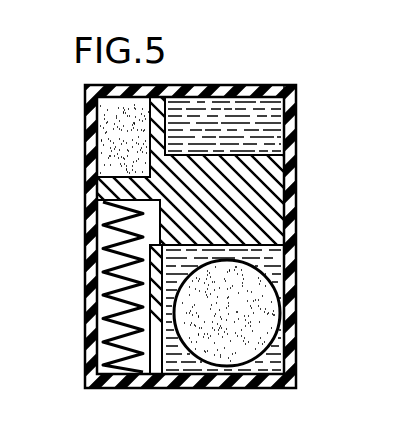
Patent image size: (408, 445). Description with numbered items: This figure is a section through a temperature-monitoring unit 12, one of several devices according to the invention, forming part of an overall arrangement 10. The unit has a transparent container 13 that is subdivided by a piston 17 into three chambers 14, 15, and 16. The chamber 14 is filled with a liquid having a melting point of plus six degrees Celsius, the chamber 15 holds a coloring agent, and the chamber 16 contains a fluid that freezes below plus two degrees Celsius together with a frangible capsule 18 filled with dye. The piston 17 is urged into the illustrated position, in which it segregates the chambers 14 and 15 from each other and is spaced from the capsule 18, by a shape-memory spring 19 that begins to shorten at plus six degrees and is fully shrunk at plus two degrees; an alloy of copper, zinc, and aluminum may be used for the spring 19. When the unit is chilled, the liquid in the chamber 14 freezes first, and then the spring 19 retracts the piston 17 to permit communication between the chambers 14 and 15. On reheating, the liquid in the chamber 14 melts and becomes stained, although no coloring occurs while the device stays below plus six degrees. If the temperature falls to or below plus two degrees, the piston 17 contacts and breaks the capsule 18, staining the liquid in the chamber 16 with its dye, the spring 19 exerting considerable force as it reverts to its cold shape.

The dispenser 10 is at (386, 0).
The temperature-monitoring unit 12 is at (299, 257).
The transparent container 13 is at (288, 168).
The chamber 14 is at (282, 124).
The chamber 15 is at (96, 143).
The chamber 16 is at (277, 359).
The piston 17 is at (242, 213).
The frangible capsule 18 is at (243, 308).
The shape-memory spring 19 is at (113, 323).